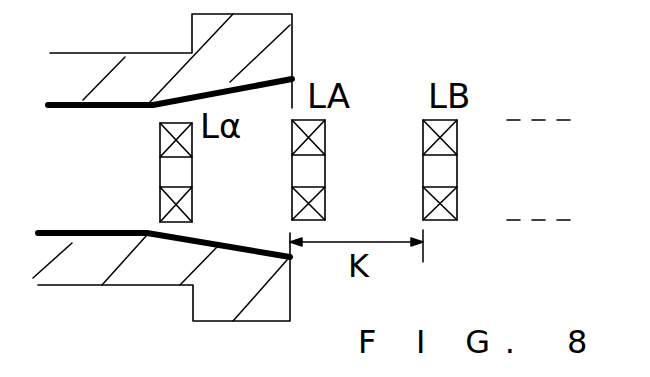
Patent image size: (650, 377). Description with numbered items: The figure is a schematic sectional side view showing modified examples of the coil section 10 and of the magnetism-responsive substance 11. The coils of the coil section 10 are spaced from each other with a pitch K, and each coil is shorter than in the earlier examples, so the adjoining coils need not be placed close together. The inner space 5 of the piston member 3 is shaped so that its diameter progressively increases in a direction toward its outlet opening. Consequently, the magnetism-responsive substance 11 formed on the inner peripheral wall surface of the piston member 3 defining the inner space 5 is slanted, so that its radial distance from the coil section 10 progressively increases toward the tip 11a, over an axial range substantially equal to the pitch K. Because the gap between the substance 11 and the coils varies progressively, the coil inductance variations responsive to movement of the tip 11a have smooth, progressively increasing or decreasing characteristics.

The piston member 3 is at (155, 53).
The tip 11a is at (290, 80).
The magnetism-responsive substance 11 is at (132, 233).
The inner space 5 is at (80, 190).
The coil section 10 is at (477, 162).